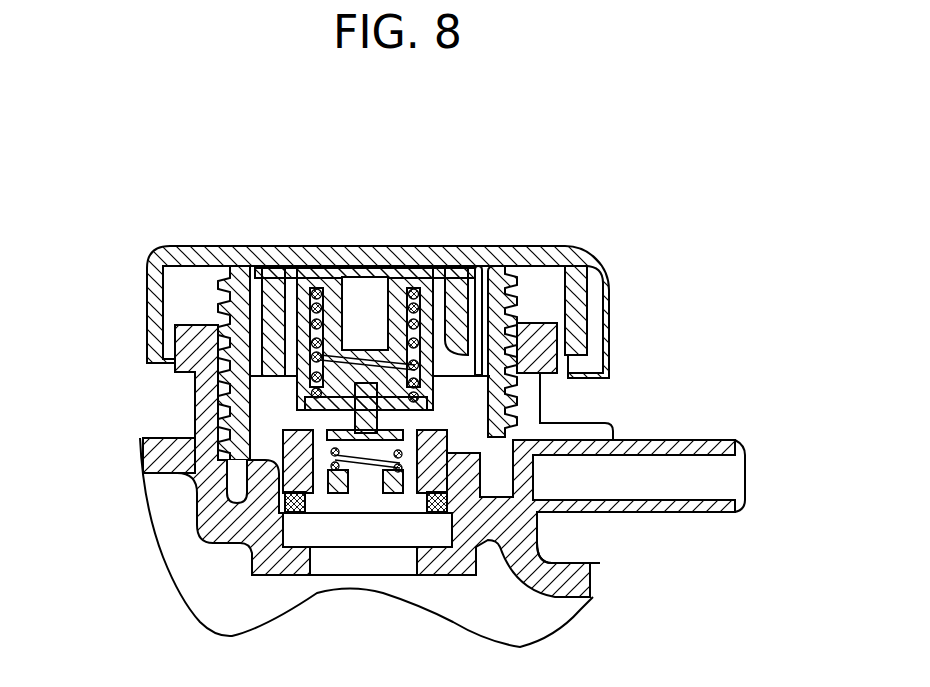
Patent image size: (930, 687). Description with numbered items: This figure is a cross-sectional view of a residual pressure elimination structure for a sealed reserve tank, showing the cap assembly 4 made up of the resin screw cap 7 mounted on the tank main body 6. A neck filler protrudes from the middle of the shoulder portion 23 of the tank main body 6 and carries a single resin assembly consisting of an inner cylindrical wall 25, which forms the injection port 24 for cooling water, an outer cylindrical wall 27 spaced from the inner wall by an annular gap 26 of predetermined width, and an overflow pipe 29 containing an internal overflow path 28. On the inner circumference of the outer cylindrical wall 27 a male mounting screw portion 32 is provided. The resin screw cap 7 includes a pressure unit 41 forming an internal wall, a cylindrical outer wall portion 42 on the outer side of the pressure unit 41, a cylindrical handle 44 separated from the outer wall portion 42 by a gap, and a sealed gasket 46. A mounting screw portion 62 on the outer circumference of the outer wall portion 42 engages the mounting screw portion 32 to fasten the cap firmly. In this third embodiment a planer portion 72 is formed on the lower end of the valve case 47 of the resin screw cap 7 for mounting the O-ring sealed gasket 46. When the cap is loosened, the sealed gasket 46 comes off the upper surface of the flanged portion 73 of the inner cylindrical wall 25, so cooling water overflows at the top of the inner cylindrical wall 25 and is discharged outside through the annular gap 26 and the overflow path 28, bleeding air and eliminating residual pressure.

The cap 4 is at (172, 124).
The tank main body 6 is at (121, 471).
The resin screw cap 7 is at (402, 246).
The shoulder portion 23 is at (152, 453).
The injection port 24 is at (348, 562).
The inner cylindrical wall 25 is at (262, 470).
The annular gap 26 is at (532, 437).
The outer cylindrical wall 27 is at (208, 393).
The overflow path 28 is at (678, 487).
The overflow pipe 29 is at (665, 440).
The mounting screw portion 32 is at (236, 350).
The pressure unit 41 is at (277, 266).
The outer wall portion 42 is at (494, 290).
The cylindrical handle 44 is at (606, 300).
The sealed gasket 46 is at (297, 540).
The valve case 47 is at (519, 370).
The mounting screw portion 62 is at (500, 305).
The planer portion 72 is at (537, 538).
The flanged portion 73 is at (427, 540).